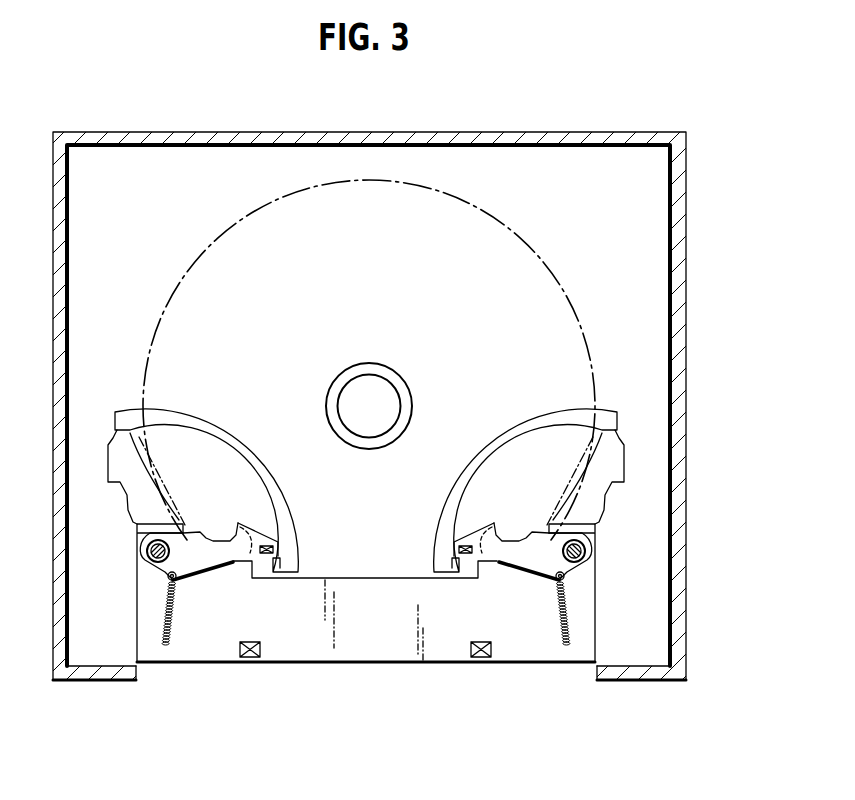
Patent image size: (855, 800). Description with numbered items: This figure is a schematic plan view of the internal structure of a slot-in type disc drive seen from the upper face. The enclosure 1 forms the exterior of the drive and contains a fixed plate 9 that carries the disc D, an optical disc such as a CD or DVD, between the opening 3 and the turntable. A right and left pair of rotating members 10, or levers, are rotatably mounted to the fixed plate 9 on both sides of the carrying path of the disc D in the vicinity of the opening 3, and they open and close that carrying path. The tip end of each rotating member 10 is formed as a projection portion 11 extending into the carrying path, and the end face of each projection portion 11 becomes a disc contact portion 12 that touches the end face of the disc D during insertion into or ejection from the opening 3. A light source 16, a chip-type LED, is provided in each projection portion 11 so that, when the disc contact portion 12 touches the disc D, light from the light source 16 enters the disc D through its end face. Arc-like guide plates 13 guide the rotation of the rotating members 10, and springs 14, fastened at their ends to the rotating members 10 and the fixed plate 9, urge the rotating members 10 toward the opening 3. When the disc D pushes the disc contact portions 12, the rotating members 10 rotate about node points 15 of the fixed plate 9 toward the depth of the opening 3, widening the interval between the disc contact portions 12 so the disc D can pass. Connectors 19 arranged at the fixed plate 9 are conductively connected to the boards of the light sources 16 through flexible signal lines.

The enclosure 1 is at (688, 272).
The disc D is at (528, 242).
The opening 3 is at (312, 682).
The fixed plate 9 is at (388, 664).
The rotating member 10 is at (214, 562).
The projection portion 11 is at (262, 530).
The disc contact portion 12 is at (267, 578).
The arc-like guide plate 13 is at (210, 417).
The spring 14 is at (160, 642).
The node point 15 is at (147, 560).
The light source 16 is at (274, 549).
The connector 19 is at (246, 664).